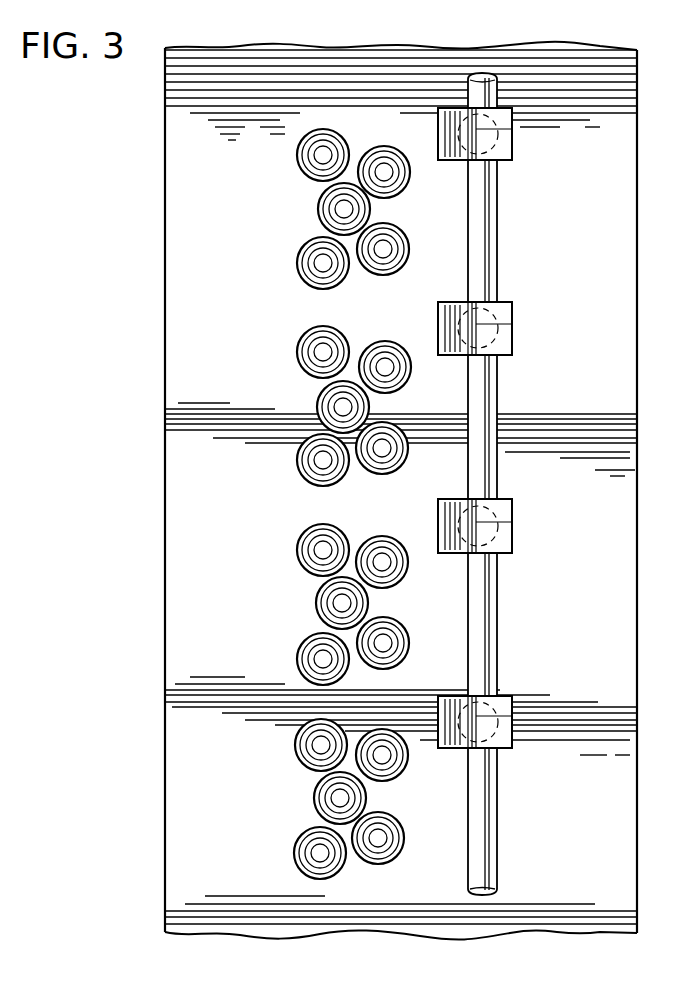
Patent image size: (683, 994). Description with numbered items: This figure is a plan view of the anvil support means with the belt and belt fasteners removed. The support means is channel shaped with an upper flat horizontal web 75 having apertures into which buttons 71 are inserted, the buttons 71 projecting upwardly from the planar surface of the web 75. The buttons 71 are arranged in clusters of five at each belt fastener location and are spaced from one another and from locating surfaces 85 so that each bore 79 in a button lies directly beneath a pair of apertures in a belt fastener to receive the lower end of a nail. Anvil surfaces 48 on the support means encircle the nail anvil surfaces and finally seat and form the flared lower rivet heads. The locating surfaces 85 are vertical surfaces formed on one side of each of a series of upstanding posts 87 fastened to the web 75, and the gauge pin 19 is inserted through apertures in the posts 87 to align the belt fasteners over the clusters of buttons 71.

The web 75 is at (432, 896).
The buttons 71 is at (388, 142).
The anvil surfaces 48 is at (298, 152).
The bore 79 is at (383, 172).
The gauge pin 19 is at (488, 252).
The locating surfaces 85 is at (501, 108).
The upstanding posts 87 is at (522, 132).